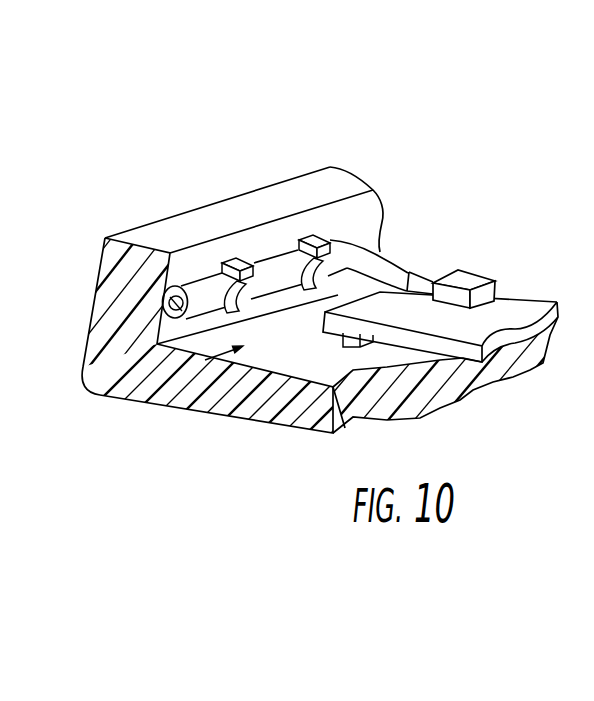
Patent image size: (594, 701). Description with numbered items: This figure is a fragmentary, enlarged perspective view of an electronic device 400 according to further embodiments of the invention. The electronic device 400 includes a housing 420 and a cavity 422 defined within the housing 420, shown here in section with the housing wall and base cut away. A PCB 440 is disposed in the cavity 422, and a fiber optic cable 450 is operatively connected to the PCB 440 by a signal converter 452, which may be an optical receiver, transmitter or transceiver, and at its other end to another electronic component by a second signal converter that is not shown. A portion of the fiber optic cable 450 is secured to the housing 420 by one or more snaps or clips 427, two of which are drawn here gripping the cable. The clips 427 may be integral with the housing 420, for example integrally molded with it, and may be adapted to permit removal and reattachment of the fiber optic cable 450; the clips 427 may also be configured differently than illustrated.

The electronic device 400 is at (329, 105).
The housing 420 is at (237, 405).
The cavity 422 is at (131, 396).
The clips 427 is at (233, 260).
The PCB 440 is at (515, 296).
The fiber optic cable 450 is at (282, 262).
The signal converter 452 is at (464, 283).